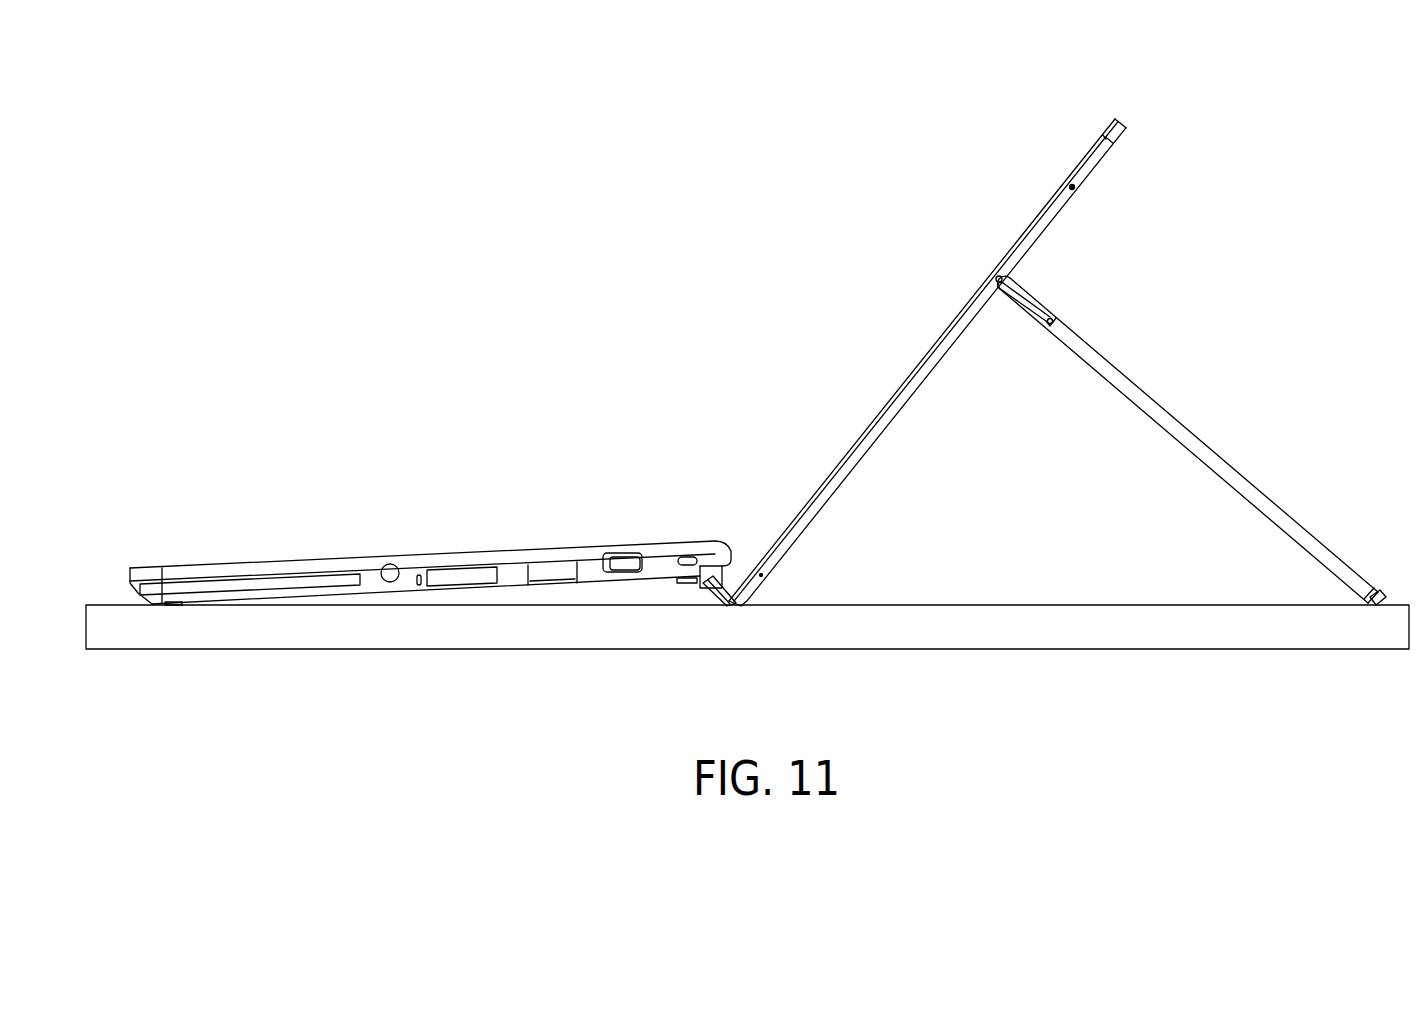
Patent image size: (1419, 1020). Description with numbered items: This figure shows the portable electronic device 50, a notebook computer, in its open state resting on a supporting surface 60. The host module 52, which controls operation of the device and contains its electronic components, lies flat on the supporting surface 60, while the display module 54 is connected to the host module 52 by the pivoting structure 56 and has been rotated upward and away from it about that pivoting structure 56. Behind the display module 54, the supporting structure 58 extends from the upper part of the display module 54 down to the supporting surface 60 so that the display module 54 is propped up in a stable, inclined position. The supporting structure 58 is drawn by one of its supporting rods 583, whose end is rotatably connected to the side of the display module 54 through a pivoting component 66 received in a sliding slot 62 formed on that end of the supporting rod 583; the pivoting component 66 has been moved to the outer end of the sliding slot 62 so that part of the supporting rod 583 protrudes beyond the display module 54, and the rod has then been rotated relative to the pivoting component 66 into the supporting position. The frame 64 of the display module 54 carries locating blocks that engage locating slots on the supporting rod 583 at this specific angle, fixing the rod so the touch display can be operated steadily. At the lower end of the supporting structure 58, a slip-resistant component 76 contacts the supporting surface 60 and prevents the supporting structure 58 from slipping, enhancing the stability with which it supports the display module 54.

The portable electronic device 50 is at (283, 136).
The host module 52 is at (508, 567).
The display module 54 is at (960, 300).
The pivoting structure 56 is at (716, 560).
The supporting structure 58 is at (1188, 439).
The supporting rod 583 is at (1163, 414).
The supporting surface 60 is at (1322, 636).
The sliding slot 62 is at (1028, 301).
The frame 64 is at (1093, 165).
The pivoting component 66 is at (997, 275).
The slip-resistant component 76 is at (1379, 598).